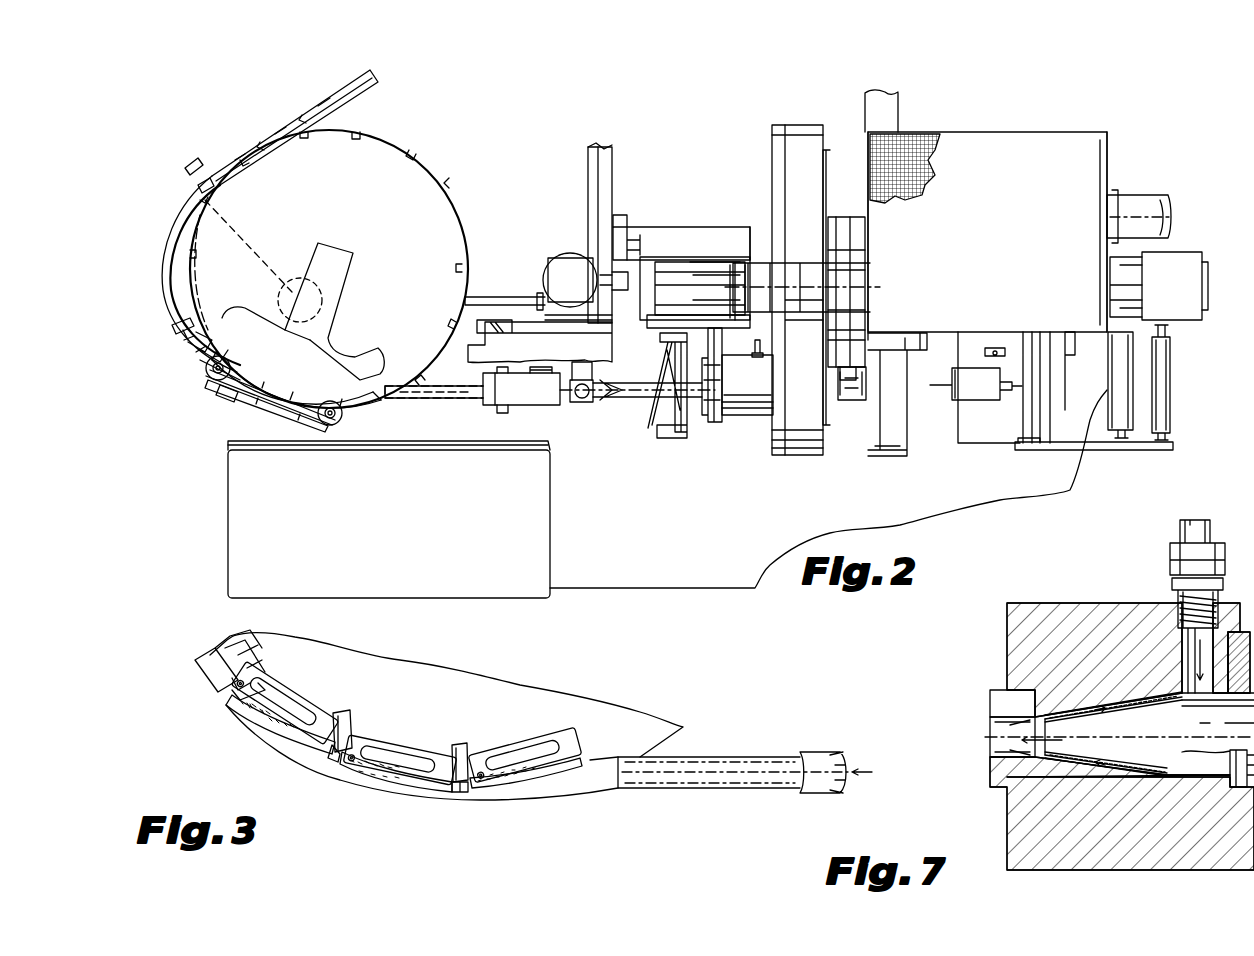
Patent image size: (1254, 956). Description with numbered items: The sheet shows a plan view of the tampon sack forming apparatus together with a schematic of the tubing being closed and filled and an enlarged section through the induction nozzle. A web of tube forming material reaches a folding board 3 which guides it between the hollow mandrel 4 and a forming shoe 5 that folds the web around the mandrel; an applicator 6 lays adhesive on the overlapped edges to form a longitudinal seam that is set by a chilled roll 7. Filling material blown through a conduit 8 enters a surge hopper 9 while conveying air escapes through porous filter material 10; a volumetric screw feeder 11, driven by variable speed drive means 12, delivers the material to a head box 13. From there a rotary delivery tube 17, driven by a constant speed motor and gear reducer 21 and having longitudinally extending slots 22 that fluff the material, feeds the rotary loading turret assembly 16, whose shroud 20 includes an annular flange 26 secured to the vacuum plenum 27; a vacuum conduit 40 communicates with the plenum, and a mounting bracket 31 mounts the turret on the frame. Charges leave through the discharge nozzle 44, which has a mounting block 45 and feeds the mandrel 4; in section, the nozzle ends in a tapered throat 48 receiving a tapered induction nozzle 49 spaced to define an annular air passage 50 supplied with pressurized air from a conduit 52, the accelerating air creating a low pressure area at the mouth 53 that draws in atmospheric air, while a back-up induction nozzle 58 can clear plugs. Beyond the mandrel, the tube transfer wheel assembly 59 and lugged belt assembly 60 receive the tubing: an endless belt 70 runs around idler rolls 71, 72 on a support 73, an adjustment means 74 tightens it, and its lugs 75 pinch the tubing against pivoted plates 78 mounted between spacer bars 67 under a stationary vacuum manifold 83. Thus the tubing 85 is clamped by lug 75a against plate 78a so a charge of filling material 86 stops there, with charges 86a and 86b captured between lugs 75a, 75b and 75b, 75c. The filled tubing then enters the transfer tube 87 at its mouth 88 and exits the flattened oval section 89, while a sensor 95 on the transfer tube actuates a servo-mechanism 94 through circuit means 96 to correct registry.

In FIG. 2, the folding board 3 is at (685, 430).
In FIG. 2, the hollow mandrel 4 is at (420, 392).
In FIG. 3, the hollow mandrel 4 is at (816, 757).
In FIG. 2, the forming shoe 5 is at (632, 398).
In FIG. 2, the applicator 6 is at (580, 402).
In FIG. 2, the chilled roll 7 is at (538, 410).
In FIG. 2, the conduit 8 is at (1136, 192).
In FIG. 2, the surge hopper 9 is at (1108, 146).
In FIG. 2, the porous filter material 10 is at (915, 132).
In FIG. 2, the volumetric screw feeder 11 is at (800, 268).
In FIG. 2, the variable speed drive means 12 is at (1180, 252).
In FIG. 2, the head box 13 is at (656, 265).
In FIG. 2, the rotary loading turret assembly 16 is at (764, 166).
In FIG. 2, the rotary delivery tube 17 is at (682, 278).
In FIG. 2, the cover plate or shroud 20 is at (775, 195).
In FIG. 2, the constant speed motor and gear reducer 21 is at (578, 258).
In FIG. 2, the longitudinally extending slots 22 is at (708, 275).
In FIG. 2, the annular flange 26 is at (802, 125).
In FIG. 2, the vacuum plenum 27 is at (826, 166).
In FIG. 2, the mounting bracket 31 is at (850, 215).
In FIG. 2, the vacuum conduit 40 is at (920, 348).
In FIG. 2, the discharge nozzle 44 is at (705, 390).
In FIG. 7, the discharge nozzle 44 is at (1008, 718).
In FIG. 2, the mounting block 45 is at (750, 418).
In FIG. 7, the mounting block 45 is at (1058, 606).
In FIG. 7, the tapered throat 48 is at (1130, 695).
In FIG. 7, the induction nozzle 49 is at (1115, 706).
In FIG. 3, the annular air passage 50 is at (609, 683).
In FIG. 7, the annular air passage 50 is at (1103, 709).
In FIG. 2, the conduit 52 is at (752, 348).
In FIG. 7, the conduit 52 is at (1212, 525).
In FIG. 7, the mouth 53 is at (1044, 748).
In FIG. 2, the back-up induction nozzle 58 is at (855, 405).
In FIG. 2, the tube transfer wheel assembly 59 is at (463, 183).
In FIG. 2, the lugged belt assembly 60 is at (262, 412).
In FIG. 3, the spacer bars 67 is at (345, 716).
In FIG. 2, the endless belt 70 is at (296, 428).
In FIG. 2, the idler roll 71 is at (205, 372).
In FIG. 2, the idler roll 72 is at (345, 417).
In FIG. 2, the support 73 is at (238, 404).
In FIG. 2, the adjustment means 74 is at (176, 330).
In FIG. 2, the lugs 75 is at (280, 395).
In FIG. 3, the lug 75a is at (464, 792).
In FIG. 3, the lug 75b is at (330, 762).
In FIG. 3, the lug 75c is at (232, 695).
In FIG. 3, the plates 78 is at (292, 690).
In FIG. 3, the plate 78a is at (512, 742).
In FIG. 2, the stationary vacuum manifold 83 is at (345, 360).
In FIG. 3, the tubing 85 is at (598, 790).
In FIG. 3, the charge of filling material 86 is at (550, 786).
In FIG. 3, the charge of filling material 86a is at (390, 782).
In FIG. 3, the charge of filling material 86b is at (275, 725).
In FIG. 2, the transfer tube 87 is at (172, 184).
In FIG. 2, the mouth or leading end 88 is at (198, 320).
In FIG. 2, the flattened oval section 89 is at (308, 112).
In FIG. 2, the servo-mechanism 94 is at (280, 300).
In FIG. 2, the sensor 95 is at (193, 165).
In FIG. 2, the circuit means 96 is at (235, 233).